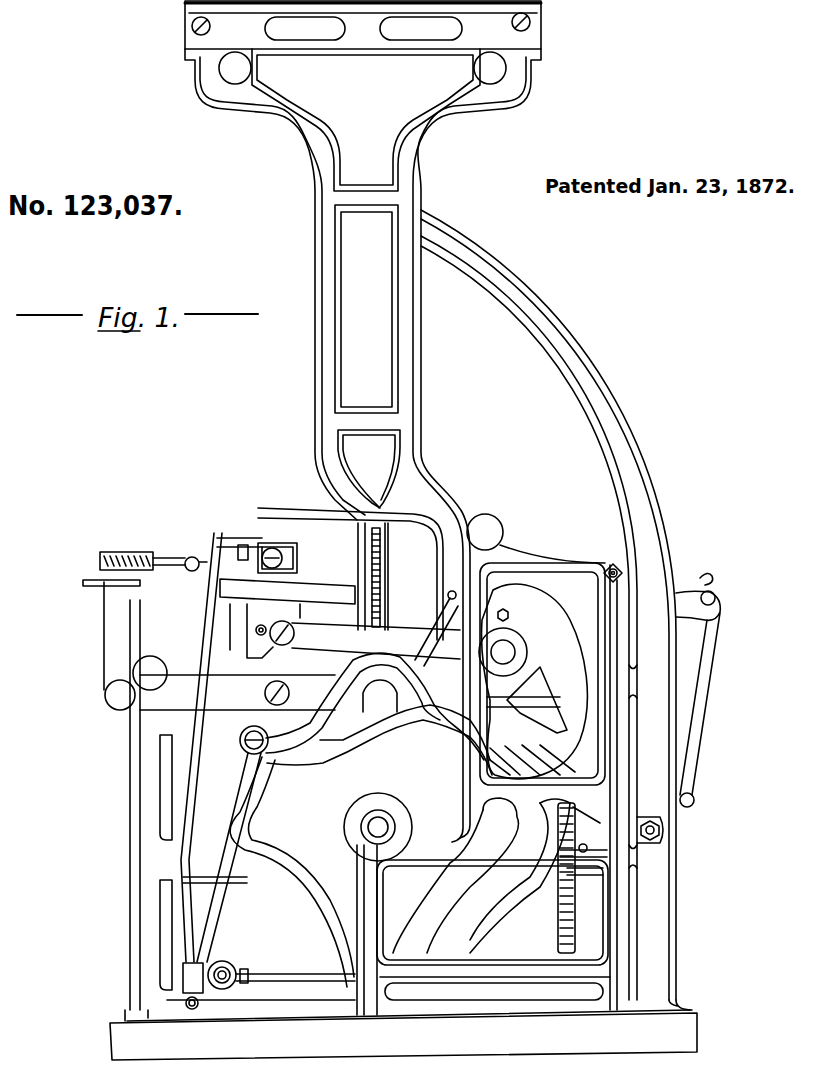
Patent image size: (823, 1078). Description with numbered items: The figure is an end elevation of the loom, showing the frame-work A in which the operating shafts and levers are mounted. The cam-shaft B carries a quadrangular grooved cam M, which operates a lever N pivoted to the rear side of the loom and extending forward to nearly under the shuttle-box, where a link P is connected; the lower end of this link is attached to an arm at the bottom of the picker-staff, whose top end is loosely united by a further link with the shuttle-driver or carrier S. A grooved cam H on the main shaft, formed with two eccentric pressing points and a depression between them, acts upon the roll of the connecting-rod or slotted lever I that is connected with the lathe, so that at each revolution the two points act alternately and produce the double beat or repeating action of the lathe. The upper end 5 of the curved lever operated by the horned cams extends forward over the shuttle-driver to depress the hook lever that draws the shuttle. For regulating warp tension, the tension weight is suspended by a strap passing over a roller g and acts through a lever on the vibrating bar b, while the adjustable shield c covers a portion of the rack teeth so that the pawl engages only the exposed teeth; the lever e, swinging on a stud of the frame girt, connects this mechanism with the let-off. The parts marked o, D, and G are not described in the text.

The frame-work A is at (390, 530).
The cam-shaft B is at (378, 827).
The link P is at (268, 771).
The lever N is at (379, 714).
The quadrangular grooved cam M is at (400, 872).
The rack guide pin o is at (582, 878).
The rail D is at (350, 574).
The upper end of lever U 5 is at (181, 537).
The roller g is at (282, 540).
The connecting-rod or slotted lever I is at (358, 663).
The lever e is at (465, 628).
The grooved cam H is at (535, 681).
The cam hub G is at (503, 652).
The vibrating bar b is at (698, 594).
The adjustable shield c is at (700, 710).
The shuttle-driver or carrier S is at (650, 822).